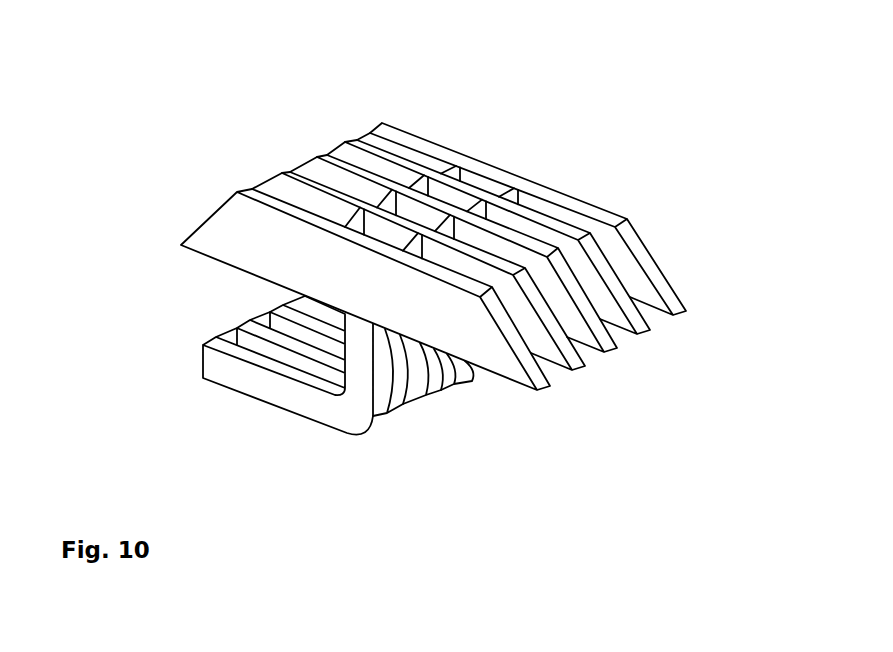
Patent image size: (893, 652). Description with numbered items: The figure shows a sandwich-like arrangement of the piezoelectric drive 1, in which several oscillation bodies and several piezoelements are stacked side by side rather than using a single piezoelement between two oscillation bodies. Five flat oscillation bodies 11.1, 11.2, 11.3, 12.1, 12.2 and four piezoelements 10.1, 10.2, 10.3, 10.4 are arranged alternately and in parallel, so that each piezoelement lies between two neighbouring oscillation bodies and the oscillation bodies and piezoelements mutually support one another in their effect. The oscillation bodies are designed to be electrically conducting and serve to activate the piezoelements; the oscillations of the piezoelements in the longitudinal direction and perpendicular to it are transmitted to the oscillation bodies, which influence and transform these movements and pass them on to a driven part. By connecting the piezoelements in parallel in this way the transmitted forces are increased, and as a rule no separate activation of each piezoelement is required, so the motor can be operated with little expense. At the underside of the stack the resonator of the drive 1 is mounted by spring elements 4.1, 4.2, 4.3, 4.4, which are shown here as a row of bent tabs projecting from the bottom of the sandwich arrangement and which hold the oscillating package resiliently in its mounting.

The piezoelectric drive 1 is at (110, 154).
The spring element 4.1 is at (252, 378).
The spring element 4.2 is at (402, 398).
The connection lug 4.3 is at (443, 392).
The connection lug 4.4 is at (467, 367).
The piezoelement 10.1 is at (377, 233).
The piezoelement 10.2 is at (405, 212).
The piezoelement 10.3 is at (437, 193).
The piezoelement 10.4 is at (483, 183).
The oscillation body 11.1 is at (543, 392).
The oscillation body 11.2 is at (608, 356).
The oscillation body 11.3 is at (682, 317).
The oscillation body 12.1 is at (577, 372).
The oscillation body 12.2 is at (642, 334).